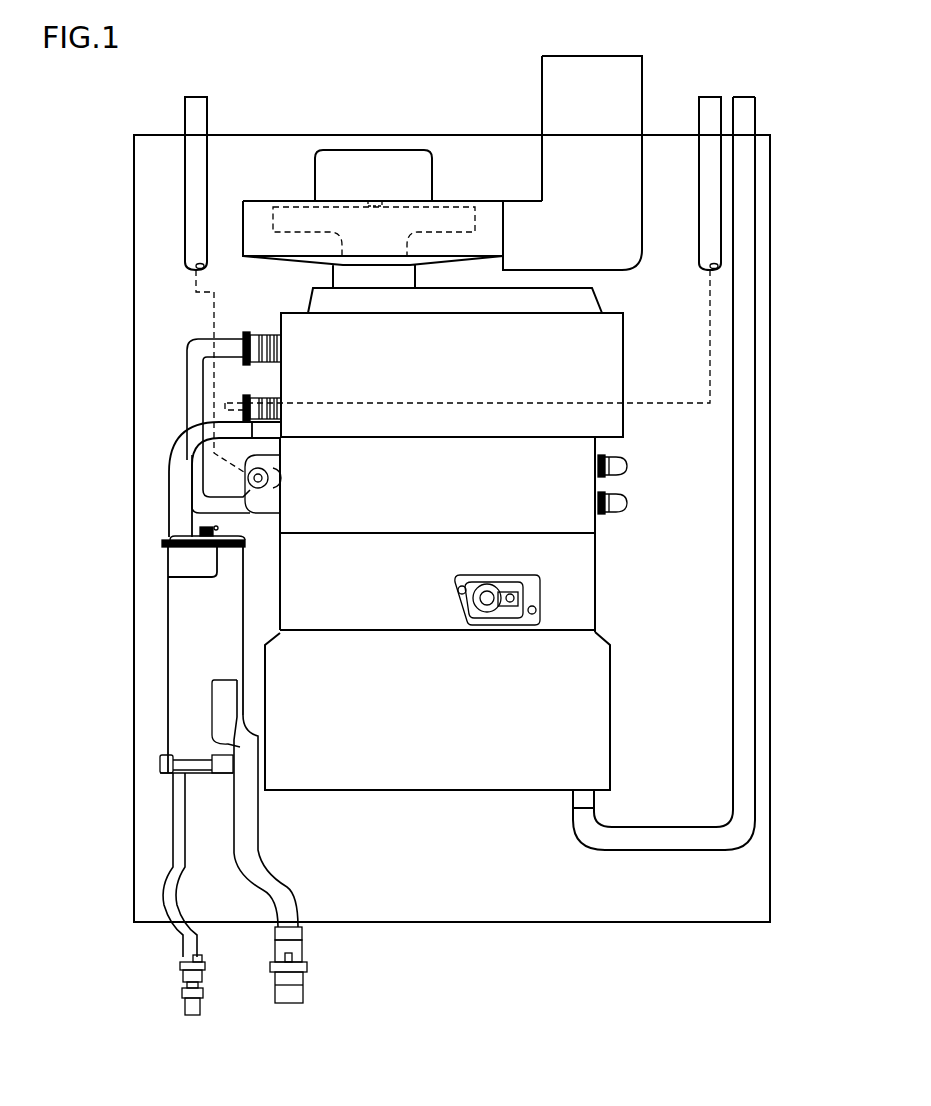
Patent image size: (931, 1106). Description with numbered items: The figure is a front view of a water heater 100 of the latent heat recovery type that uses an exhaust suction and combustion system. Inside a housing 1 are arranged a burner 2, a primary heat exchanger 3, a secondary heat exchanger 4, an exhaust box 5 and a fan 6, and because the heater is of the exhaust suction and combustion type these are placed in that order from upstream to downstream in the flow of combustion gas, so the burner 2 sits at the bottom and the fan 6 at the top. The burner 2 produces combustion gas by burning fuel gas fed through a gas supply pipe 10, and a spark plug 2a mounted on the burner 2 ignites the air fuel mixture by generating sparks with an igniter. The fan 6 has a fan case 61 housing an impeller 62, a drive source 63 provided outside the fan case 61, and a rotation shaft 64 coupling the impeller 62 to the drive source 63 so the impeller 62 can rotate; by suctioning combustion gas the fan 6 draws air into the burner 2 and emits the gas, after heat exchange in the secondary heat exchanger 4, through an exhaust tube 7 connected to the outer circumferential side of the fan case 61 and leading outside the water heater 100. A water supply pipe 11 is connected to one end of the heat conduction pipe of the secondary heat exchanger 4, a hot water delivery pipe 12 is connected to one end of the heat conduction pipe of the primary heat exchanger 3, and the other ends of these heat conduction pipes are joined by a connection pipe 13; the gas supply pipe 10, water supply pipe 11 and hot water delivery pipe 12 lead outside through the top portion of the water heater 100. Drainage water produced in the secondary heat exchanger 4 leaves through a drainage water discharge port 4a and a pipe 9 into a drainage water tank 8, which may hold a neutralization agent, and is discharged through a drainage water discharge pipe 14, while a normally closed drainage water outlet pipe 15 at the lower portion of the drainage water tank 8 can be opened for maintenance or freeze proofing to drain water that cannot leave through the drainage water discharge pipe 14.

The water heater 100 is at (796, 106).
The housing 1 is at (770, 194).
The burner 2 is at (534, 772).
The spark plug 2a is at (482, 603).
The primary heat exchanger 3 is at (548, 534).
The secondary heat exchanger 4 is at (608, 423).
The drainage water discharge port 4a is at (268, 432).
The exhaust box 5 is at (580, 302).
The fan 6 is at (392, 169).
The fan case 61 is at (256, 201).
The impeller 62 is at (297, 217).
The drive source 63 is at (395, 170).
The rotation shaft 64 is at (375, 206).
The exhaust tube 7 is at (642, 102).
The drainage water tank 8 is at (183, 630).
The pipe 9 is at (180, 457).
The gas supply pipe 10 is at (745, 97).
The water supply pipe 11 is at (709, 97).
The hot water delivery pipe 12 is at (200, 97).
The connection pipe 13 is at (202, 348).
The drainage water discharge pipe 14 is at (250, 813).
The drainage water outlet pipe 15 is at (180, 822).